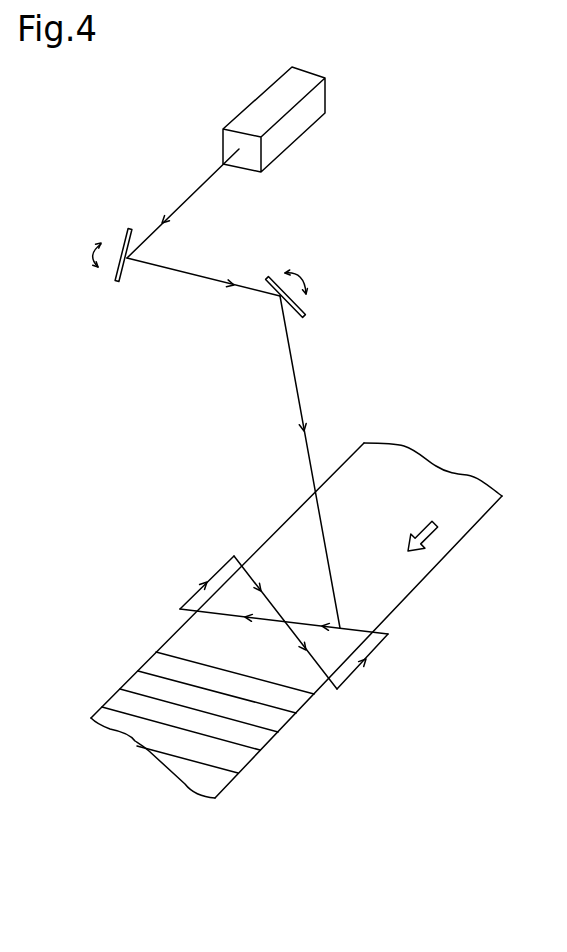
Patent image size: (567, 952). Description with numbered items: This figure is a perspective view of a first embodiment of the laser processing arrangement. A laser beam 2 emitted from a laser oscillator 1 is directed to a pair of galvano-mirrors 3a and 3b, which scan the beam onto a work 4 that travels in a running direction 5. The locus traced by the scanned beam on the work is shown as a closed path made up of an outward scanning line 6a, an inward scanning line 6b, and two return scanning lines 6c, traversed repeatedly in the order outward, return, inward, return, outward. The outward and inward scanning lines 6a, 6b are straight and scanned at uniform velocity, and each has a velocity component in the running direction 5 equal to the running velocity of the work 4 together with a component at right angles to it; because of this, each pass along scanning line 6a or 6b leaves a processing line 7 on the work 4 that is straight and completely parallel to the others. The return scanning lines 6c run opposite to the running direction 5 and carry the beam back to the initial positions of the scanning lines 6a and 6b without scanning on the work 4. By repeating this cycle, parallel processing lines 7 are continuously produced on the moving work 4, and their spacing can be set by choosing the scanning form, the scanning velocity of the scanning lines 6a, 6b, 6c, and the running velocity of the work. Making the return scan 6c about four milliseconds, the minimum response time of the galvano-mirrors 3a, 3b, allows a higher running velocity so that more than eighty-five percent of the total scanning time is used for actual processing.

The laser oscillator 1 is at (323, 112).
The laser beam 2 is at (193, 192).
The galvano-mirror 3a is at (115, 278).
The galvano-mirror 3b is at (302, 312).
The work 4 is at (413, 577).
The running direction 5 is at (430, 536).
The scanning line of outward way 6a is at (268, 603).
The scanning line of inward way 6b is at (262, 618).
The scanning line in reversal direction 6c is at (197, 590).
The processing line 7 is at (300, 697).